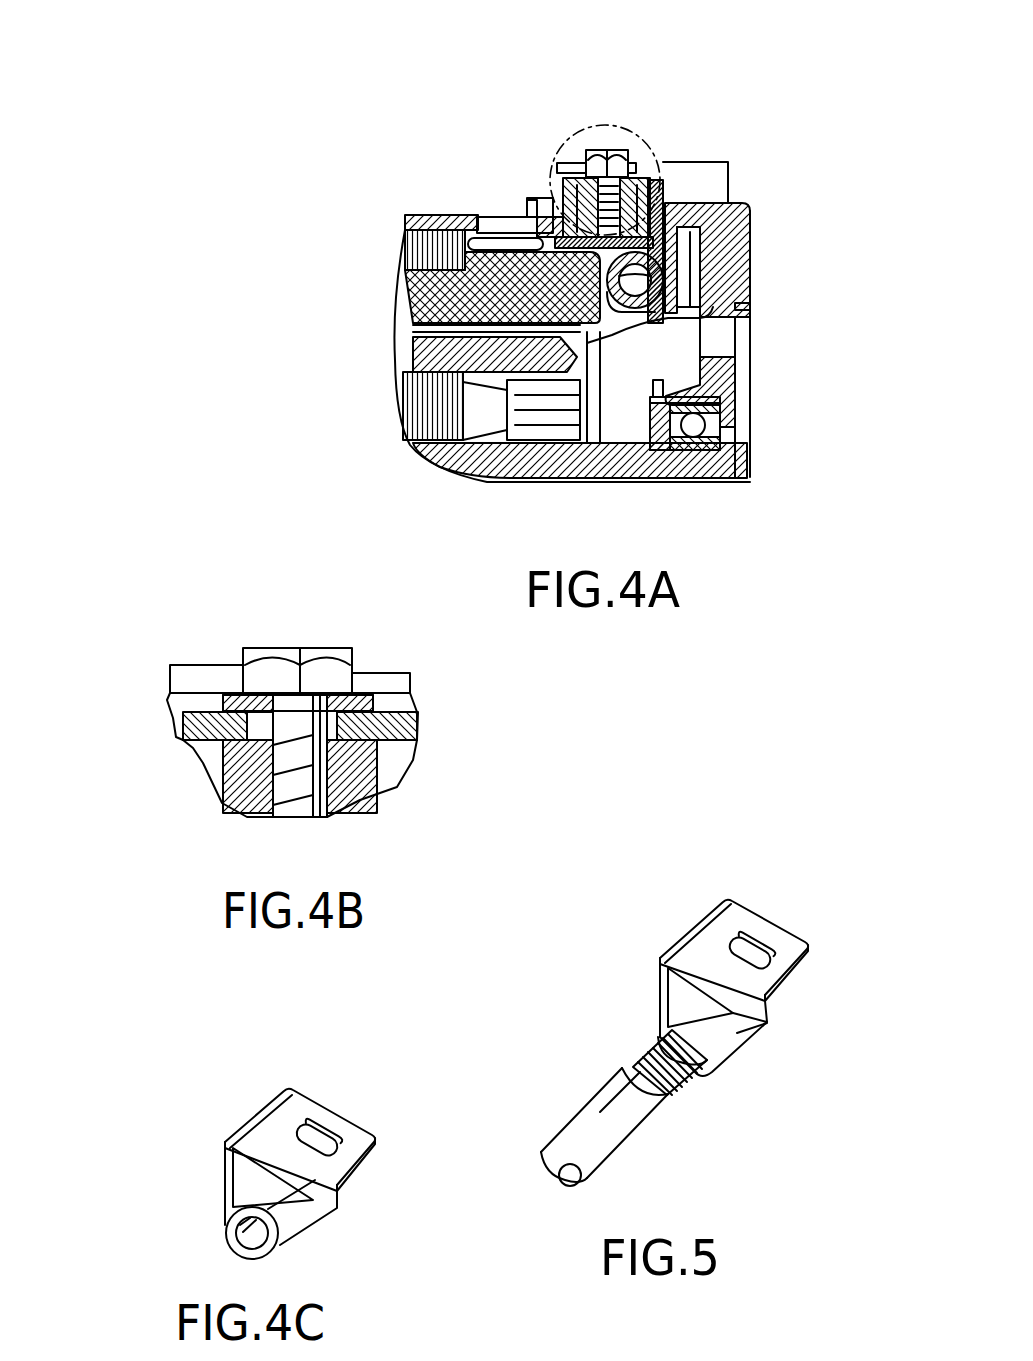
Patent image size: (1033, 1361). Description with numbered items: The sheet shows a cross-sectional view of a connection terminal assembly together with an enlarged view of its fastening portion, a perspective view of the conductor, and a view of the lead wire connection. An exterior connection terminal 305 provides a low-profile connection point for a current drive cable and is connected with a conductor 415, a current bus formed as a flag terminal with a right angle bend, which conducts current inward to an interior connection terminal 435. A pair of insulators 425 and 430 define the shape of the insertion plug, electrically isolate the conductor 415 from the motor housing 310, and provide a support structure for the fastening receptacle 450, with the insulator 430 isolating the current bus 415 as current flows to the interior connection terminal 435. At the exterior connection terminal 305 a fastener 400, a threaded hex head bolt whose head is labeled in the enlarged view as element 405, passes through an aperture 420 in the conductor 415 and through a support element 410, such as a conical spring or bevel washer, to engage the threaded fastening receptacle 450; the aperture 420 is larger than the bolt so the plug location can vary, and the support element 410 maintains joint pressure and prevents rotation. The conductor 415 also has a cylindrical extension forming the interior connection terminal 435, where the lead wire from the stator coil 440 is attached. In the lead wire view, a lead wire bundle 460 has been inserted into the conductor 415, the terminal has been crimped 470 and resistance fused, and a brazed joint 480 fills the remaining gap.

In FIG. 4A, the exterior connection terminal 305 is at (598, 115).
In FIG. 4A, the motor housing 310 is at (392, 196).
In FIG. 4B, the motor housing 310 is at (155, 650).
In FIG. 4A, the fastener 400 is at (628, 152).
In FIG. 4B, the fastener 400 is at (283, 672).
In FIG. 4B, the nut 405 is at (245, 657).
In FIG. 4A, the support element 410 is at (600, 170).
In FIG. 4B, the support element 410 is at (373, 707).
In FIG. 4A, the conductor 415 is at (652, 184).
In FIG. 4B, the conductor 415 is at (185, 733).
In FIG. 4C, the conductor 415 is at (225, 1141).
In FIG. 5, the conductor 415 is at (660, 953).
In FIG. 4B, the aperture 420 is at (258, 727).
In FIG. 4C, the aperture 420 is at (300, 1127).
In FIG. 5, the aperture 420 is at (737, 947).
In FIG. 4A, the insulator 425 is at (537, 207).
In FIG. 4A, the insulator 430 is at (690, 245).
In FIG. 4A, the interior connection terminal 435 is at (667, 288).
In FIG. 4C, the interior connection terminal 435 is at (227, 1237).
In FIG. 5, the interior connection terminal 435 is at (653, 1035).
In FIG. 4A, the stator coil 440 is at (570, 355).
In FIG. 4A, the fastening receptacle 450 is at (567, 220).
In FIG. 4B, the fastening receptacle 450 is at (223, 760).
In FIG. 5, the lead wire bundle 460 is at (682, 1139).
In FIG. 5, the crimped interior connection terminal 470 is at (740, 1035).
In FIG. 5, the brazed joint 480 is at (683, 1007).